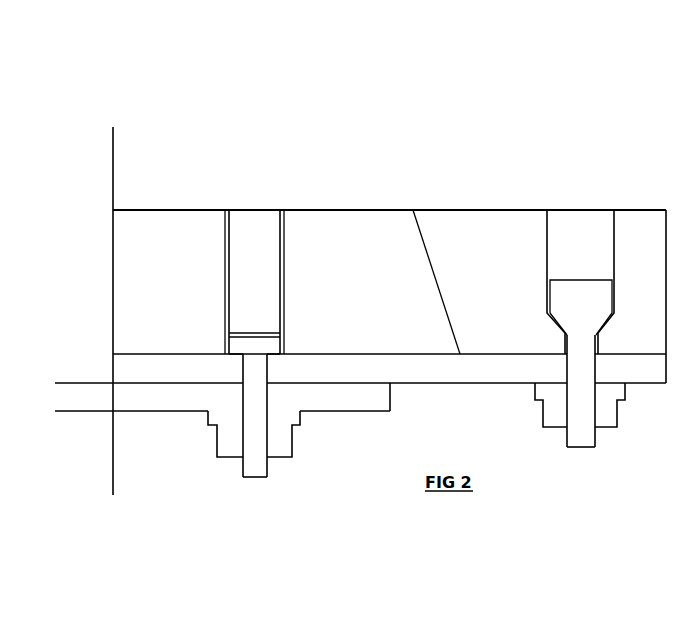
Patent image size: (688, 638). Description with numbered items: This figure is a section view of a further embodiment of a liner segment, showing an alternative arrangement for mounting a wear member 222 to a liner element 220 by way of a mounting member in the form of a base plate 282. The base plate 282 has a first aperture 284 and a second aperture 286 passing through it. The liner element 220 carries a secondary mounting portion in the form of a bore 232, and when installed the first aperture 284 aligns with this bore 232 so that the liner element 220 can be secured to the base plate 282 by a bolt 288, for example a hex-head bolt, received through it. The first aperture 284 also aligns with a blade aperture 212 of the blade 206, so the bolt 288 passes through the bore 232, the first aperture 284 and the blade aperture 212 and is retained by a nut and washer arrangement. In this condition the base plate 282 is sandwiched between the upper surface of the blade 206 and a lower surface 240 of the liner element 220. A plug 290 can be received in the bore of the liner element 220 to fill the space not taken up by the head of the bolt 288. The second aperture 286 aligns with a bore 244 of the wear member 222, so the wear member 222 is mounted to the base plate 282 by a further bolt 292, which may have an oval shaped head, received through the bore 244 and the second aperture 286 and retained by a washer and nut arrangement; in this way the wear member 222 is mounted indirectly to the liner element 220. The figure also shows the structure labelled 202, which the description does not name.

The frame wall 202 is at (91, 150).
The blade 206 is at (163, 398).
The blade aperture 212 is at (269, 380).
The liner element 220 is at (172, 210).
The wear member 222 is at (487, 210).
The bore 232 is at (282, 247).
The lower surface 240 is at (140, 354).
The bore 244 is at (548, 240).
The base plate 282 is at (490, 367).
The first aperture 284 is at (283, 340).
The second aperture 286 is at (597, 366).
The bolt 288 is at (233, 343).
The plug 290 is at (243, 230).
The further bolt 292 is at (582, 435).